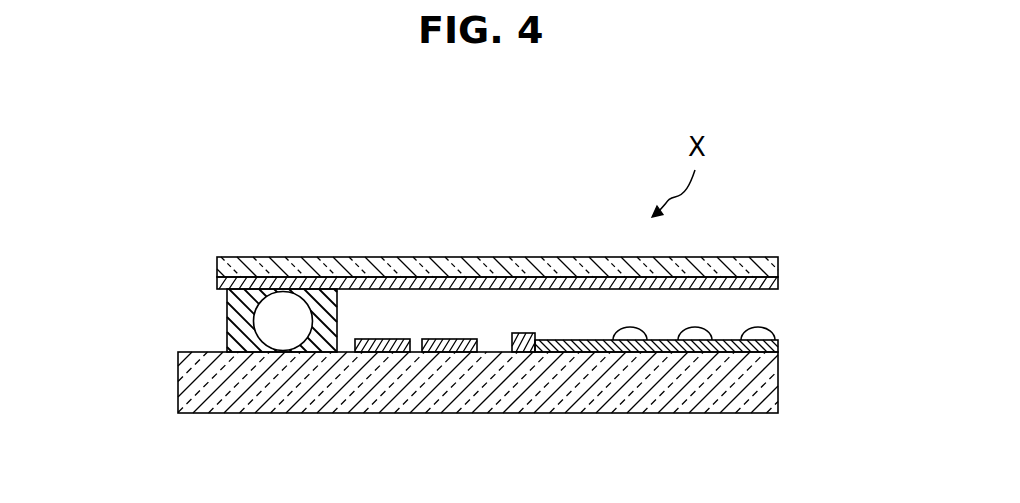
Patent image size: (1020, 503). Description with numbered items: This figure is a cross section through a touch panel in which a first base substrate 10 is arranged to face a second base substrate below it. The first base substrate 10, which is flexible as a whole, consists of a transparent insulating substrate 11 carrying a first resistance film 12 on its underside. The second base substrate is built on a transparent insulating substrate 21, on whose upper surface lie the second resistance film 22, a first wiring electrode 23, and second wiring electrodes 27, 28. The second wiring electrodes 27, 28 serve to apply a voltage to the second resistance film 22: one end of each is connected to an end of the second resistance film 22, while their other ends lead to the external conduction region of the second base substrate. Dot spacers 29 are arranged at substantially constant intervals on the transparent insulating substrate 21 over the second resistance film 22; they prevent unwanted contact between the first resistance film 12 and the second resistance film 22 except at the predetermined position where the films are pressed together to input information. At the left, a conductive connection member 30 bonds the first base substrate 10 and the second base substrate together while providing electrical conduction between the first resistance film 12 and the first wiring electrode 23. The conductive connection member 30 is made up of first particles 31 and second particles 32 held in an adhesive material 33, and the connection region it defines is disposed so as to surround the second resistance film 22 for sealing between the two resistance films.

The first base substrate 10 is at (432, 271).
The transparent insulating substrate 11 is at (217, 262).
The first resistance film 12 is at (217, 284).
The transparent insulating substrate 21 is at (772, 392).
The second resistance film 22 is at (780, 345).
The first wiring electrode 23 is at (370, 352).
The second wiring electrode 27 is at (527, 352).
The second wiring electrode 28 is at (436, 352).
The dot spacer 29 is at (696, 331).
The conductive connection member 30 is at (315, 257).
The first particles 31 is at (403, 213).
The second particles 32 is at (321, 281).
The adhesive material 33 is at (238, 298).